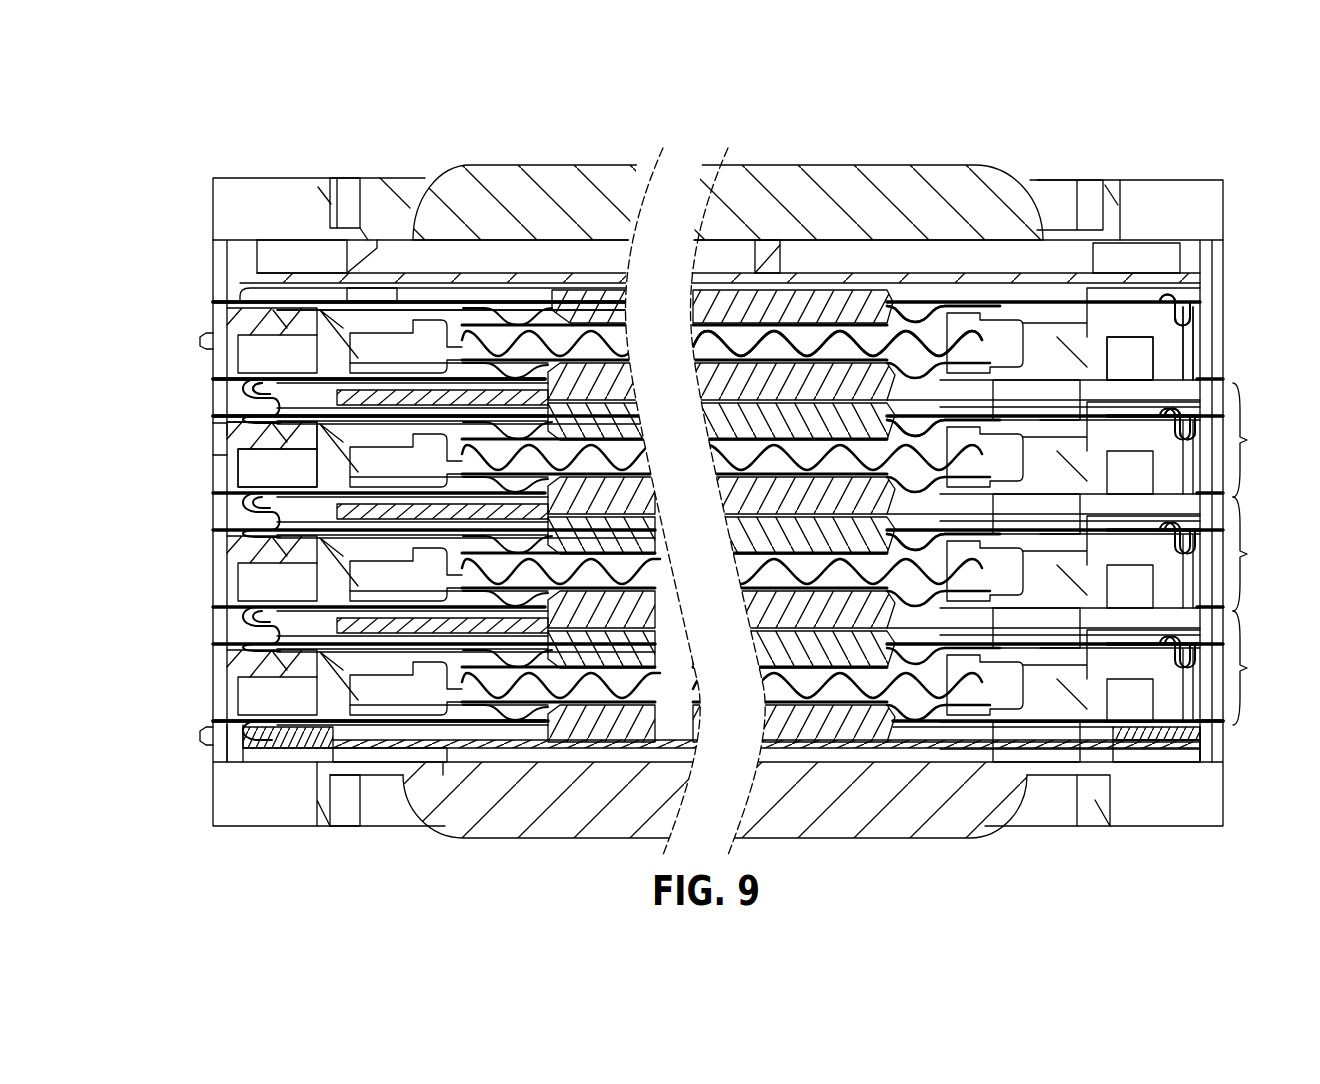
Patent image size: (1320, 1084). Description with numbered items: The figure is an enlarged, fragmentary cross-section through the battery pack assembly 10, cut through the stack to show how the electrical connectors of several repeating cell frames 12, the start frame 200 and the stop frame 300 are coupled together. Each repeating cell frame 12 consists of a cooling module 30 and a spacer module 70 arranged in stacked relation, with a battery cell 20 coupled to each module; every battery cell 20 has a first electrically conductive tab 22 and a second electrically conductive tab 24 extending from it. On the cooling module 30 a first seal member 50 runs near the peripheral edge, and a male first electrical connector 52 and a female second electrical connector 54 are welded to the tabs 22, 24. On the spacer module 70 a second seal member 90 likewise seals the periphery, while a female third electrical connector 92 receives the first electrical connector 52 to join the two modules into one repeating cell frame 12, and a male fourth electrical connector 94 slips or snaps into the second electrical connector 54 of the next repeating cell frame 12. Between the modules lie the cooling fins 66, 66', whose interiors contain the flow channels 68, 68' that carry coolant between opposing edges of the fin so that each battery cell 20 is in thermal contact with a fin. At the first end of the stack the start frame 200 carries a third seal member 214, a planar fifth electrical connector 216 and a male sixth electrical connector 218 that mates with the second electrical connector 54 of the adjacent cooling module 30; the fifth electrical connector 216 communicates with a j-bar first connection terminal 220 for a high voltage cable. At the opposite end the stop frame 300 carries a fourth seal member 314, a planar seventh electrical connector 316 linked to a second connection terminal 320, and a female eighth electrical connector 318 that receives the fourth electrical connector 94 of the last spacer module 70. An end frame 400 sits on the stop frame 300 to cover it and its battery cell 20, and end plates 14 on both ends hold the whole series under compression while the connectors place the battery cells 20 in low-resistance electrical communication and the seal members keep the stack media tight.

The battery pack assembly 10 is at (1217, 143).
The repeating cell frame 12 is at (1253, 554).
The end plate 14 is at (1226, 214).
The battery cell 20 is at (577, 722).
The first electrically conductive tab 22 is at (298, 726).
The second electrically conductive tab 24 is at (1127, 723).
The cooling module 30 is at (222, 455).
The first seal member 50 is at (224, 428).
The first electrical connector 52 is at (266, 425).
The second electrical connector 54 is at (1195, 405).
The cooling fin 66 is at (975, 433).
The flow channels 68 is at (974, 548).
The spring finger 66' is at (763, 501).
The wave spring 68' is at (837, 499).
The spacer module 70 is at (225, 417).
The second seal member 90 is at (230, 379).
The third electrical connector 92 is at (257, 383).
The fourth electrical connector 94 is at (1195, 365).
The start frame 200 is at (1226, 746).
The third seal member 214 is at (213, 721).
The fifth electrical connector 216 is at (260, 750).
The sixth electrical connector 218 is at (1160, 735).
The first connection terminal 220 is at (200, 740).
The stop frame 300 is at (1226, 348).
The fourth seal member 314 is at (227, 310).
The seventh electrical connector 316 is at (213, 302).
The eighth electrical connector 318 is at (1193, 300).
The second connection terminal 320 is at (200, 340).
The end frame 400 is at (1226, 282).